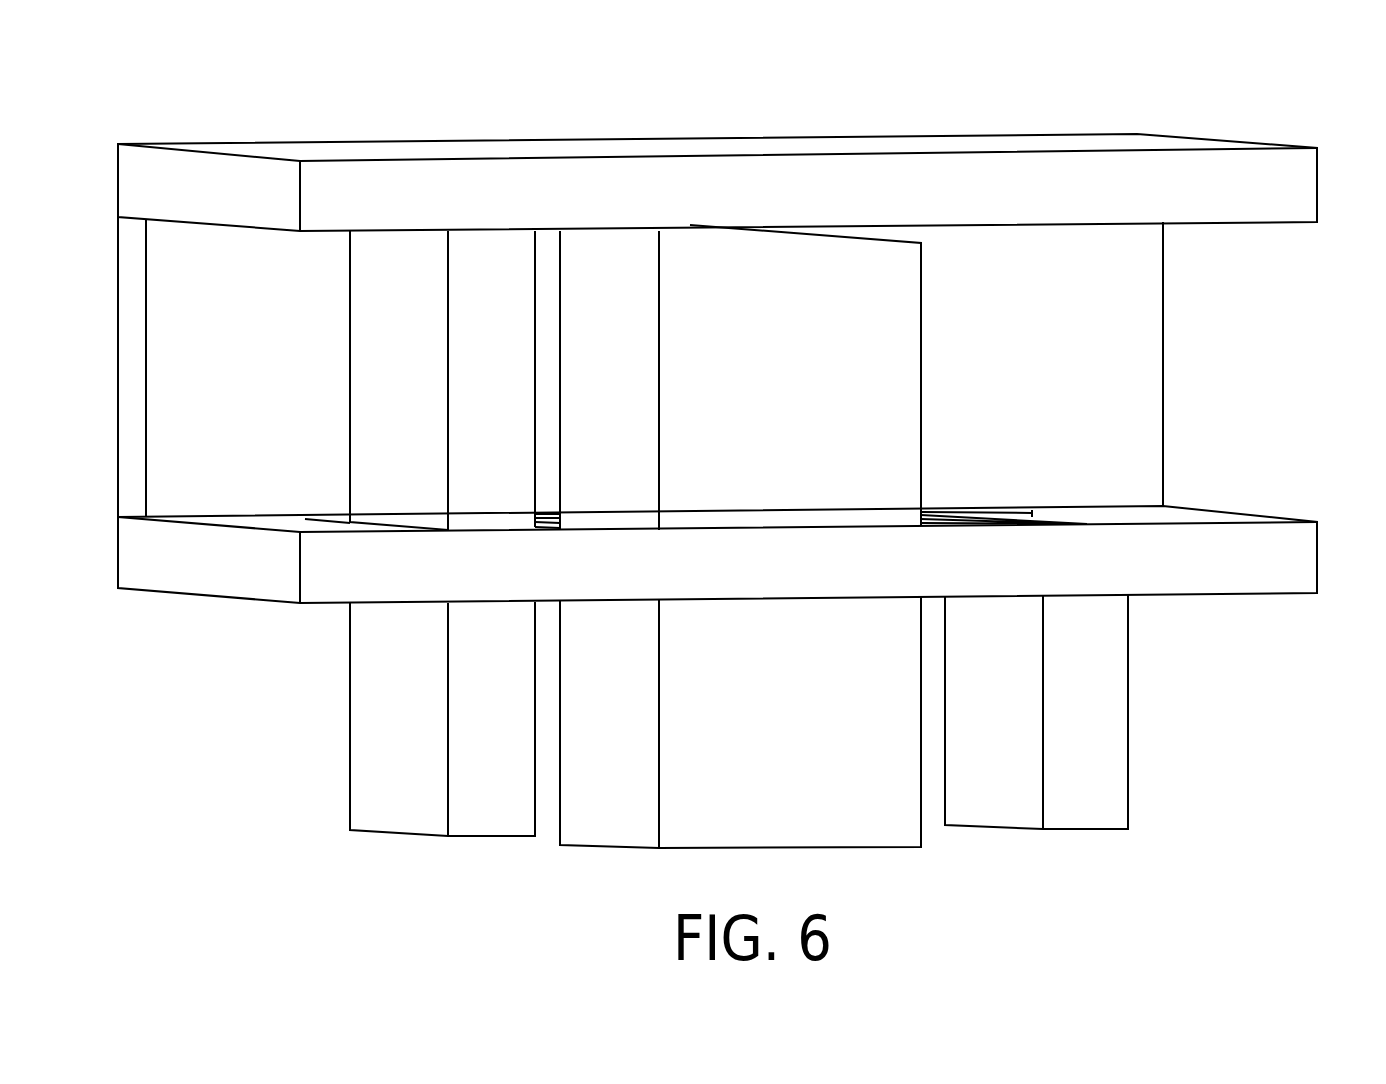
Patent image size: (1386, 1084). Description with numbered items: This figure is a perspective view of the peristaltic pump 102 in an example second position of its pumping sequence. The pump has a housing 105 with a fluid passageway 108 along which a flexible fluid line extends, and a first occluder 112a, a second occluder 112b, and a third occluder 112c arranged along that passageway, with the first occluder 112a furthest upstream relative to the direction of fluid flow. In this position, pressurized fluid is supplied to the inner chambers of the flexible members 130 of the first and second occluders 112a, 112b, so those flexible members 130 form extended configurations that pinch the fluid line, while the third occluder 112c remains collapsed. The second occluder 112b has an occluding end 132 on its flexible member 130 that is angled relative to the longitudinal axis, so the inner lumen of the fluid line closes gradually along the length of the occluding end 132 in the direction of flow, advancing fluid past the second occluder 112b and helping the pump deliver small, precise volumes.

The peristaltic pump 102 is at (1281, 92).
The housing 105 is at (1060, 165).
The fluid passageway 108 is at (987, 250).
The flexible member 130 is at (385, 270).
The occluding end 132 is at (843, 238).
The first occluder 112a is at (403, 819).
The second occluder 112b is at (848, 833).
The third occluder 112c is at (1103, 753).